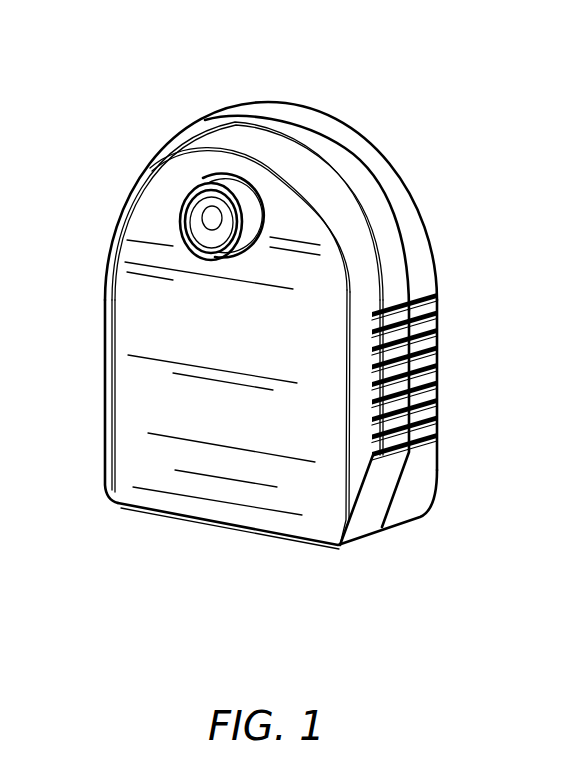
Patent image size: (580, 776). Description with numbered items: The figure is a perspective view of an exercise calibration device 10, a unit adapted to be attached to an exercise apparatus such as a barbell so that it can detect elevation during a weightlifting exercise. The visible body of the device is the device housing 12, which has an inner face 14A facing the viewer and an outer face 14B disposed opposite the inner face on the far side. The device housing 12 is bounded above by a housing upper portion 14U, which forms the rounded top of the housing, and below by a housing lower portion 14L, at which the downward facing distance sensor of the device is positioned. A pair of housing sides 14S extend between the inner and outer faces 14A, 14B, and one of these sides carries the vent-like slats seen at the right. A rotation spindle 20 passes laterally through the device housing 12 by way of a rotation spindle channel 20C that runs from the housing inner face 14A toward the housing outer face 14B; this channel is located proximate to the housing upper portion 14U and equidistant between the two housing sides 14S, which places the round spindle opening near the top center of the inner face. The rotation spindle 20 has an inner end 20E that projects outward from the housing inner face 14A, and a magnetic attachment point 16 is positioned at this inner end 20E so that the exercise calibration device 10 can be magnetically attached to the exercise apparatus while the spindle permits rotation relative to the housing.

The exercise calibration device 10 is at (274, 312).
The device housing 12 is at (258, 327).
The housing upper portion 14U is at (318, 106).
The housing lower portion 14L is at (302, 543).
The inner face 14A is at (140, 312).
The outer face 14B is at (437, 273).
The housing sides 14S is at (105, 395).
The magnetic attachment point 16 is at (210, 222).
The rotation spindle 20 is at (181, 158).
The rotation spindle channel 20C is at (205, 178).
The inner end 20E is at (227, 178).